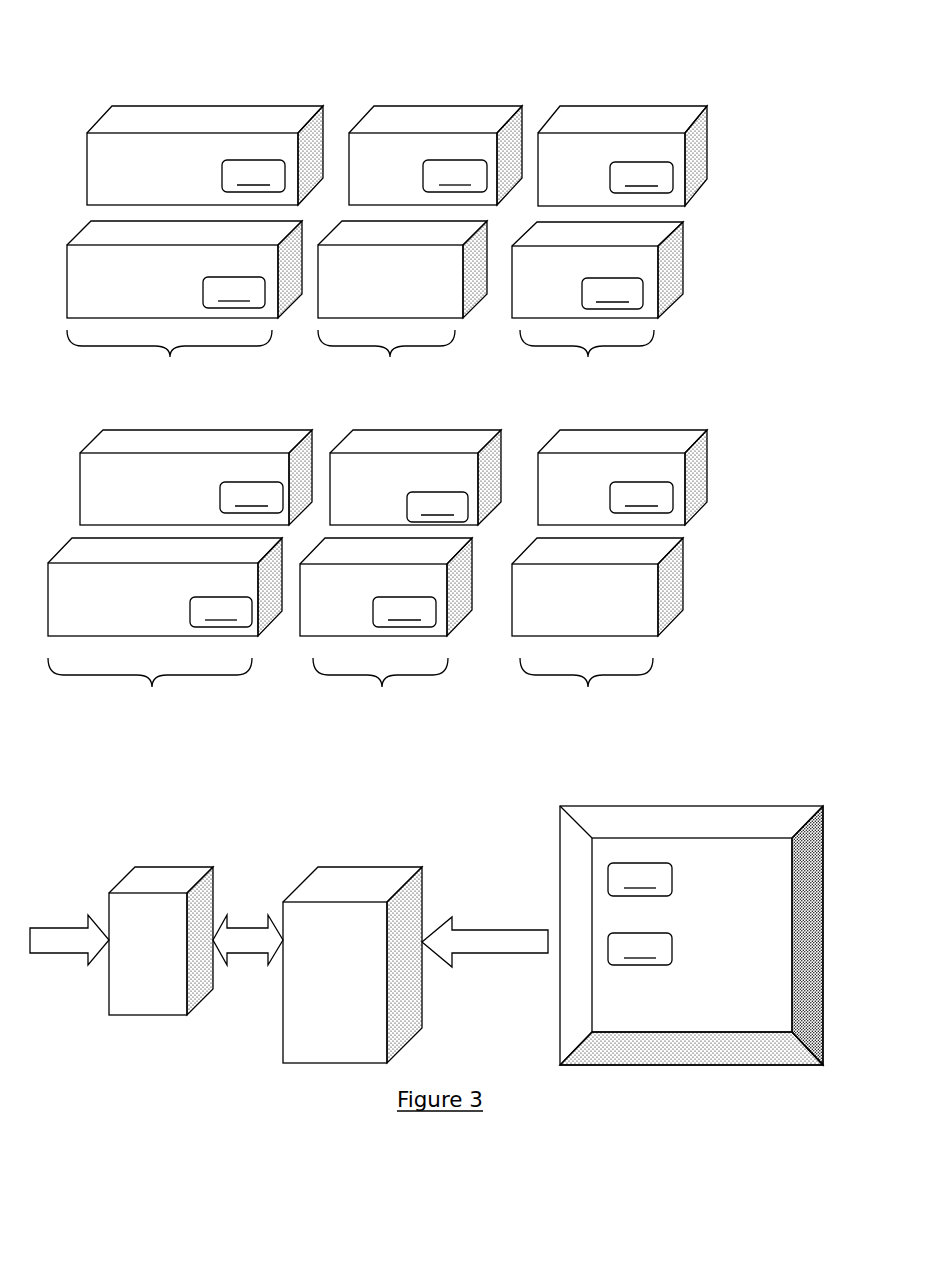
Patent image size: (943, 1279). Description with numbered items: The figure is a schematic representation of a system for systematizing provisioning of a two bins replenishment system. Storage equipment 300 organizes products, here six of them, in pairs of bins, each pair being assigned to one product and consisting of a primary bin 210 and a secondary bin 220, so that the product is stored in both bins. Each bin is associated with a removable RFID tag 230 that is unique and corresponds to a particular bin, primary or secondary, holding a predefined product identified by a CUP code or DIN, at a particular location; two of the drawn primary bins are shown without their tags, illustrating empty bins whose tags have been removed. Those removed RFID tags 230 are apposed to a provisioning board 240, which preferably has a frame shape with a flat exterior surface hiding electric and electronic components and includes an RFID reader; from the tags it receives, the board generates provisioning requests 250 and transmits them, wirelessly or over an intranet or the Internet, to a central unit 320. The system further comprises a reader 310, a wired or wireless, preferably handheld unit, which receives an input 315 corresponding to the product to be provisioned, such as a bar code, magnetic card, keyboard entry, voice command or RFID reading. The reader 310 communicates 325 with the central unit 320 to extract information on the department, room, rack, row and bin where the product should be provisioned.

The storage equipment 300 is at (262, 67).
The secondary bin 220 is at (808, 161).
The primary bin 210 is at (808, 276).
The RFID tag 230 is at (643, 293).
The provisioning board 240 is at (723, 806).
The provisioning request 250 is at (483, 933).
The reader 310 is at (158, 867).
The input 315 is at (67, 953).
The central unit 320 is at (347, 867).
The communication 325 is at (237, 933).